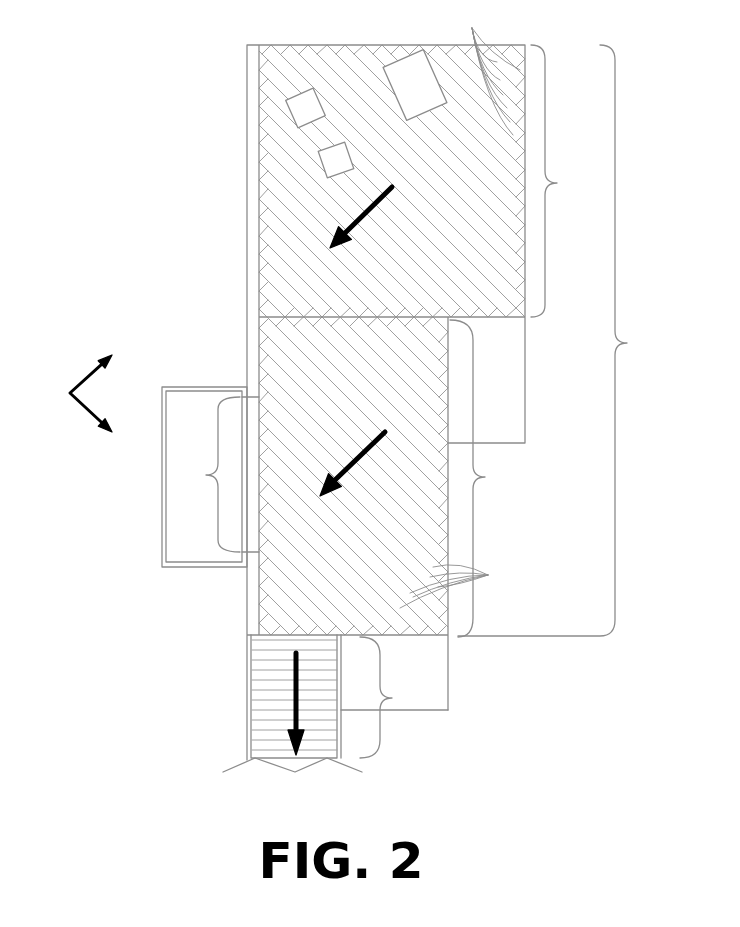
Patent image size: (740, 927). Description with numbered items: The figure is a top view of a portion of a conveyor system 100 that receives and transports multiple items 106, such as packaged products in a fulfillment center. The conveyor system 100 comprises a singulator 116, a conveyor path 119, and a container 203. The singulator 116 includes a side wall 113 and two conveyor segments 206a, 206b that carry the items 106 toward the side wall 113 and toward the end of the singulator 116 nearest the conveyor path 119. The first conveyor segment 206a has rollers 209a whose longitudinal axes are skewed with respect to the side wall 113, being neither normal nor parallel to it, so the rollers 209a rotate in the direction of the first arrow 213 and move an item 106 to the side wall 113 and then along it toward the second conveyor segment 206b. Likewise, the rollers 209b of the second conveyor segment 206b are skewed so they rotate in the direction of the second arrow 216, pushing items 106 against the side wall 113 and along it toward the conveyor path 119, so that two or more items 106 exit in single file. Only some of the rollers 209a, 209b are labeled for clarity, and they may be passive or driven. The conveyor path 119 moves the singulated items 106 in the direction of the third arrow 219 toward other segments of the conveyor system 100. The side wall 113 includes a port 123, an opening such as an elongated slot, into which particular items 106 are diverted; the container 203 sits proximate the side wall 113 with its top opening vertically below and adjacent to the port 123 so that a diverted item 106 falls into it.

The conveyor system 100 is at (73, 393).
The items 106 is at (403, 70).
The side wall 113 is at (247, 262).
The singulator 116 is at (559, 340).
The conveyor path 119 is at (394, 697).
The port 123 is at (212, 476).
The container 203 is at (181, 387).
The first conveyor segment 206a is at (570, 181).
The second conveyor segment 206b is at (494, 478).
The rollers of the first conveyor segment 209a is at (483, 69).
The rollers of the second conveyor segment 209b is at (469, 585).
The first arrow 213 is at (373, 197).
The second arrow 216 is at (360, 465).
The third arrow 219 is at (296, 695).